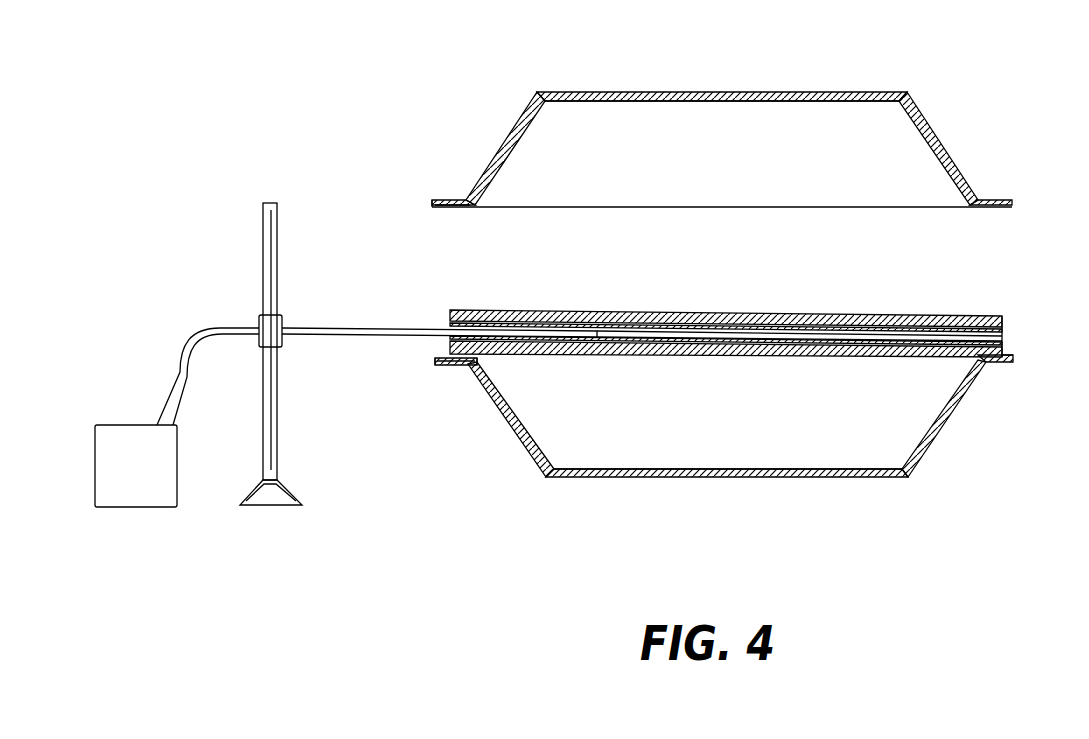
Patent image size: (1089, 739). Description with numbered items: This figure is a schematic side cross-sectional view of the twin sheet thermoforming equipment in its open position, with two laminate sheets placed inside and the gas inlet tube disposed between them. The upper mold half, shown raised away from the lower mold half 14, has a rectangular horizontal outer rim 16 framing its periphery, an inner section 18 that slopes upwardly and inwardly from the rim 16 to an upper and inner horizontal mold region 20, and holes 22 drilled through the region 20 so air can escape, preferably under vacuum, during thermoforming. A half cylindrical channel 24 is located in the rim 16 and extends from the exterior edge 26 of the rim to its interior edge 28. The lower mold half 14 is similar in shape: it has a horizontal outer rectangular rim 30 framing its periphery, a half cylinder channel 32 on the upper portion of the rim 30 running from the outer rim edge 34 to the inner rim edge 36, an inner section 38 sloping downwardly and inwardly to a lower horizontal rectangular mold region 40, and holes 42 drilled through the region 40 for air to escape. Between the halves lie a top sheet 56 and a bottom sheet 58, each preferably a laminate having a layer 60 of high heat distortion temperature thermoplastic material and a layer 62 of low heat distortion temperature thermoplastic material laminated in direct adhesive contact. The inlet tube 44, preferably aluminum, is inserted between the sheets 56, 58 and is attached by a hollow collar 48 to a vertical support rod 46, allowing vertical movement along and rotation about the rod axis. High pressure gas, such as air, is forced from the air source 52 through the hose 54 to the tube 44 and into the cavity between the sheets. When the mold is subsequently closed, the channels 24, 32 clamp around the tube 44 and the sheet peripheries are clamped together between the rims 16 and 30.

The lower mold half 14 is at (720, 453).
The rectangular horizontal outer rim 16 is at (452, 200).
The inner section 18 is at (486, 158).
The upper horizontal mold region 20 is at (762, 92).
The holes 22 is at (592, 92).
The half cylindrical channel 24 is at (448, 208).
The exterior edge 26 is at (432, 200).
The interior edge 28 is at (478, 208).
The horizontal outer rectangular rim 30 is at (462, 366).
The half cylinder channel 32 is at (435, 358).
The outer rim edge 34 is at (440, 365).
The inner rim edge 36 is at (482, 365).
The inner section 38 is at (515, 428).
The lower horizontal rectangular mold region 40 is at (777, 478).
The holes 42 is at (713, 478).
The inlet tube 44 is at (355, 328).
The vertical support rod 46 is at (278, 240).
The hollow collar 48 is at (262, 322).
The air source 52 is at (150, 475).
The hose 54 is at (183, 378).
The top sheet 56 is at (766, 299).
The bottom sheet 58 is at (726, 368).
The layer of high heat distortion temperature thermoplastic material 60 is at (960, 320).
The layer of low heat distortion temperature thermoplastic material 62 is at (887, 320).